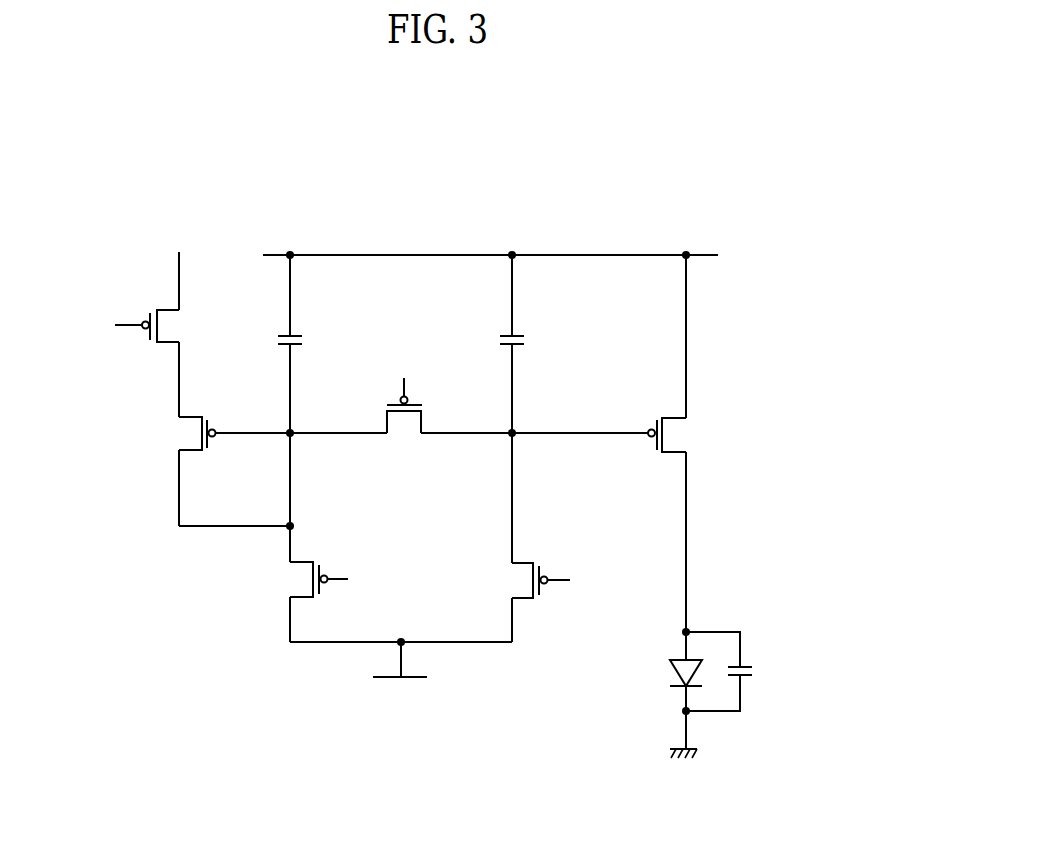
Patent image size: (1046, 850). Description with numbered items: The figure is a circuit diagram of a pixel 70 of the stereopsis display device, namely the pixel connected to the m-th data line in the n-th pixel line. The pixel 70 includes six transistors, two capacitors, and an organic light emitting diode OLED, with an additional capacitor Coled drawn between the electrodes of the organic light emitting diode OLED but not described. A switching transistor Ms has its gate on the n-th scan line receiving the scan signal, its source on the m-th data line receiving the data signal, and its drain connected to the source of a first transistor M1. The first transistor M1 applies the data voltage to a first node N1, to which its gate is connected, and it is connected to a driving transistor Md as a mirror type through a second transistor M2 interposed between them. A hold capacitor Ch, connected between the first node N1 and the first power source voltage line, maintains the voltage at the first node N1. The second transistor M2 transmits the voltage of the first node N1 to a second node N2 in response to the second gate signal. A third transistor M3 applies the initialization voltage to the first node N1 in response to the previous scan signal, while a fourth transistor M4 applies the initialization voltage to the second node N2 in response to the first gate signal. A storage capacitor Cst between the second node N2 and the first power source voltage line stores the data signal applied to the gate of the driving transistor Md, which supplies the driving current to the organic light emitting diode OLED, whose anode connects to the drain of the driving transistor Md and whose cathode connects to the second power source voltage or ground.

The pixel 70 is at (648, 185).
The switching transistor Ms is at (176, 326).
The first transistor M1 is at (181, 433).
The second transistor M2 is at (404, 431).
The third transistor M3 is at (291, 579).
The fourth transistor M4 is at (512, 580).
The driving transistor Md is at (683, 435).
The hold capacitor Ch is at (305, 340).
The storage capacitor Cst is at (528, 340).
The first node N1 is at (304, 447).
The second node N2 is at (526, 447).
The organic light emitting diode OLED is at (655, 673).
The capacitor Coled is at (767, 672).